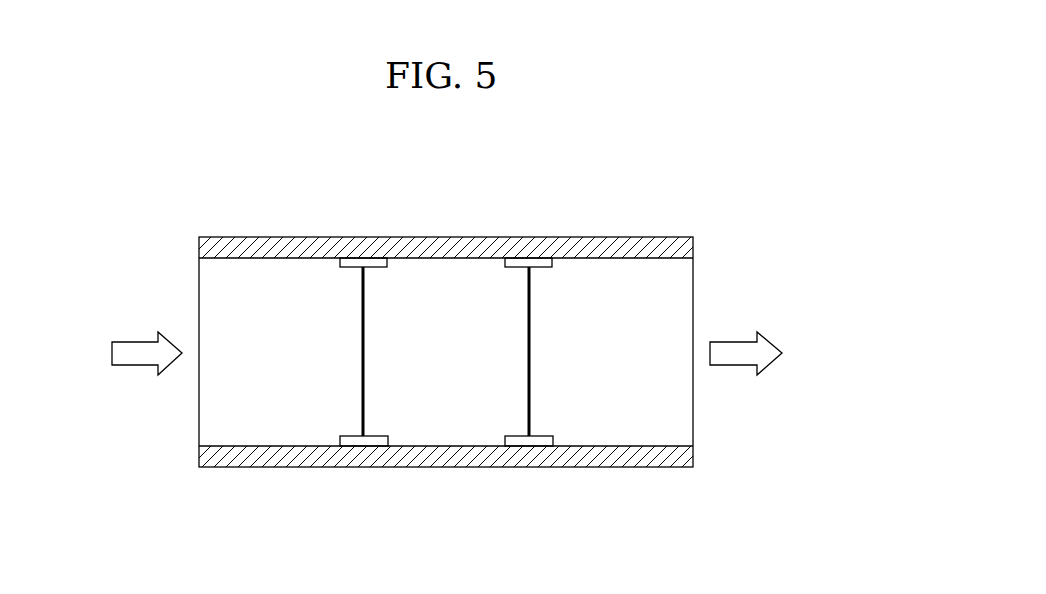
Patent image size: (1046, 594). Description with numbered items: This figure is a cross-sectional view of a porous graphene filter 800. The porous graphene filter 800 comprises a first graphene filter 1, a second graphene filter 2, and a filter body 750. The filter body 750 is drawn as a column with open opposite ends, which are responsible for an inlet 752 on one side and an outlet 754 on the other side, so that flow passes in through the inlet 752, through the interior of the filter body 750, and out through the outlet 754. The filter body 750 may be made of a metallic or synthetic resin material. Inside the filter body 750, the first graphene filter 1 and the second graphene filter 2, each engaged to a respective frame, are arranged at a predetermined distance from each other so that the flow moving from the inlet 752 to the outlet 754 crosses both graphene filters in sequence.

The porous graphene filter 800 is at (412, 318).
The filter body 750 is at (657, 460).
The inlet 752 is at (223, 398).
The outlet 754 is at (677, 305).
The first graphene filter 1 is at (365, 313).
The second graphene filter 2 is at (532, 310).